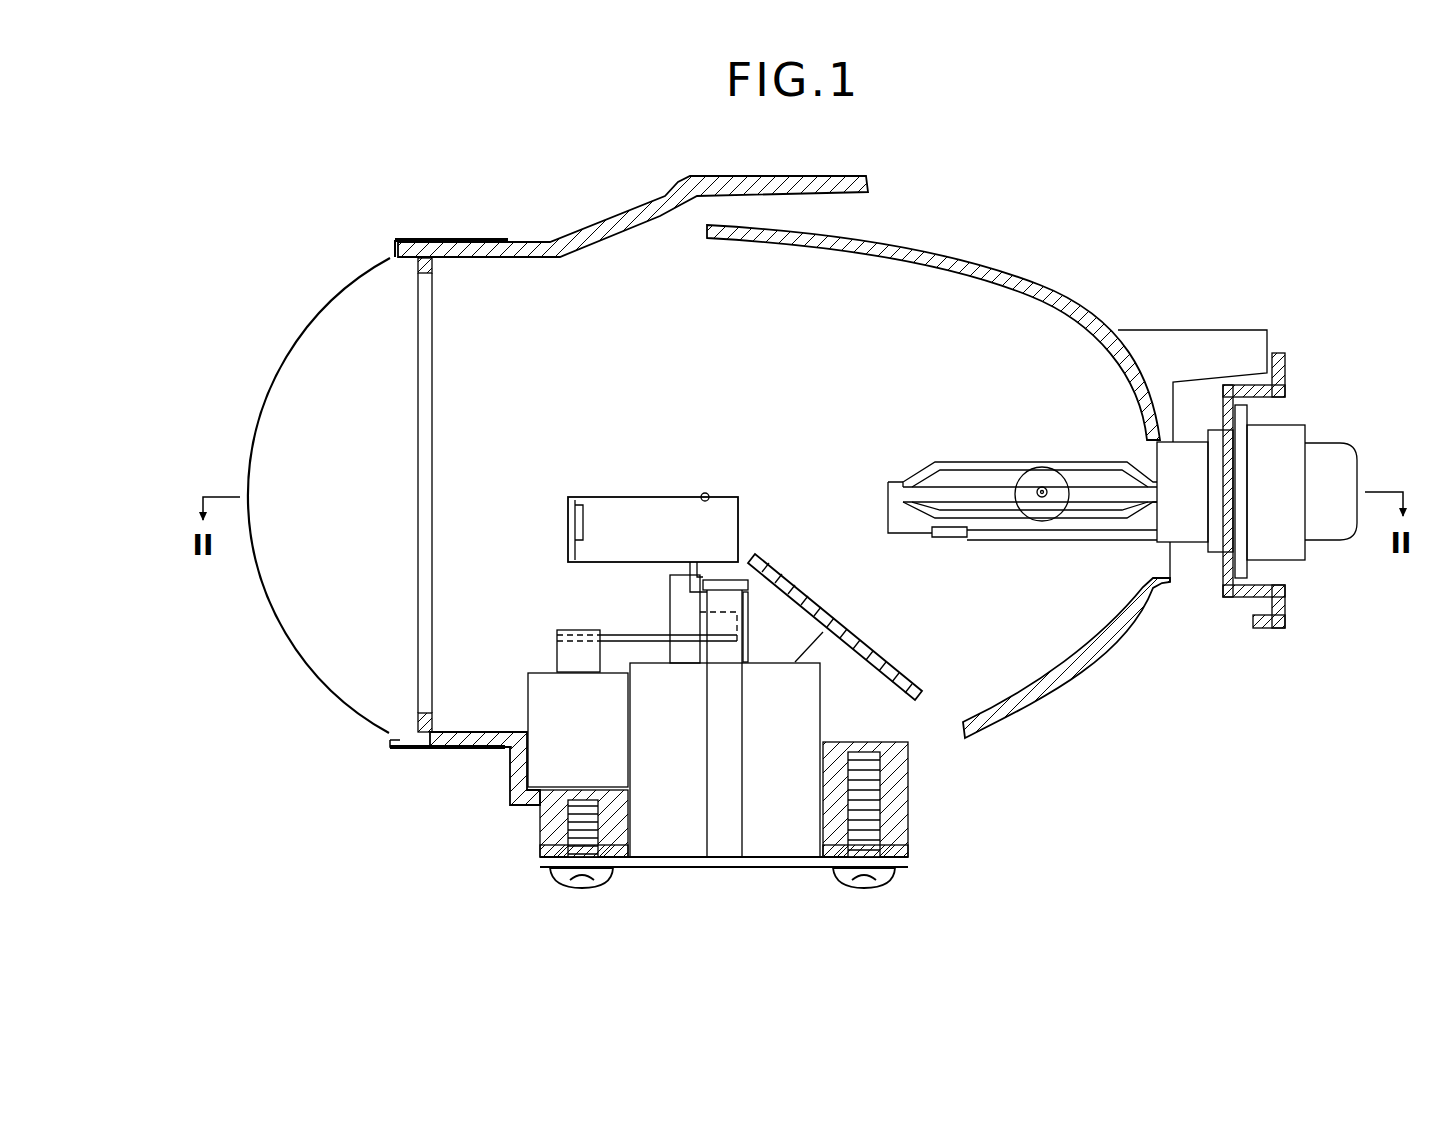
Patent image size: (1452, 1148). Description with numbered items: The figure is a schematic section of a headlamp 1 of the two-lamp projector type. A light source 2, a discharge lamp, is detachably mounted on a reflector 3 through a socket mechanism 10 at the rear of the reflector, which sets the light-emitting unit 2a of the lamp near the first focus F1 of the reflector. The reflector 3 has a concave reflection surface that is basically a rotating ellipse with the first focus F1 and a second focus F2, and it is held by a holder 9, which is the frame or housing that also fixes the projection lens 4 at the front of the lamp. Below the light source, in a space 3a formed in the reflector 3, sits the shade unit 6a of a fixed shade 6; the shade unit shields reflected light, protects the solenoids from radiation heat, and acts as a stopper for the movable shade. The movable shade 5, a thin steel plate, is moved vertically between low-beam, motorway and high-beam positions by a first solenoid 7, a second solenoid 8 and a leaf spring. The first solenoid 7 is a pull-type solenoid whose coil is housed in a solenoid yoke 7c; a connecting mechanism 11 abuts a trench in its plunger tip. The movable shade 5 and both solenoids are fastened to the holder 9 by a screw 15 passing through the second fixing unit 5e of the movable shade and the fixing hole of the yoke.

The headlamp 1 is at (357, 218).
The light source 2 is at (1010, 455).
The light-emitting unit 2a is at (1040, 505).
The reflector 3 is at (955, 238).
The space 3a is at (982, 643).
The projection lens 4 is at (320, 687).
The movable shade 5 is at (555, 520).
The second fixing unit 5e is at (683, 860).
The fixed shade 6 is at (830, 608).
The shade unit 6a is at (830, 627).
The first solenoid 7 is at (825, 708).
The solenoid yoke 7c is at (905, 850).
The second solenoid 8 is at (525, 703).
The holder 9 is at (528, 238).
The socket mechanism 10 is at (1320, 440).
The connecting mechanism 11 is at (650, 625).
The screw 15 is at (555, 873).
The first focus F1 is at (1042, 488).
The second focus F2 is at (705, 492).